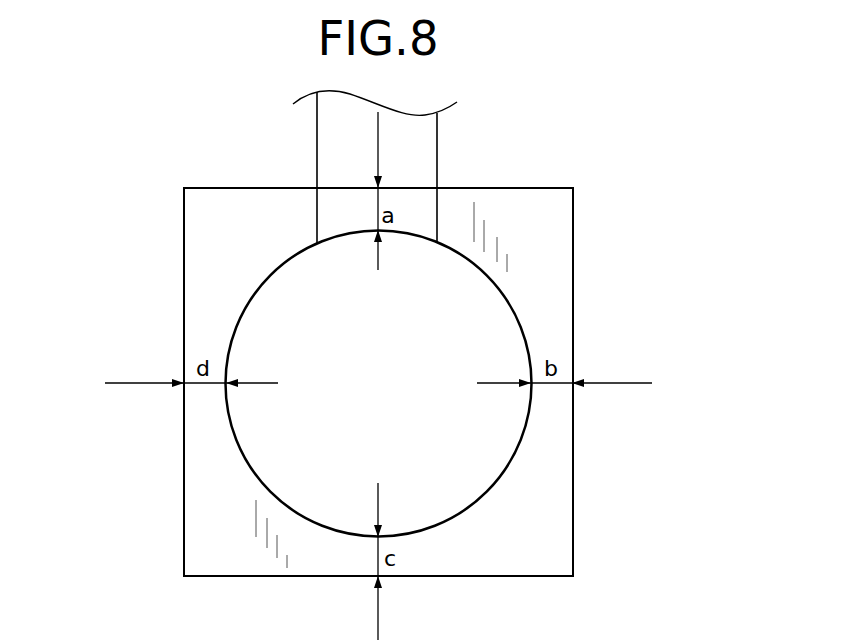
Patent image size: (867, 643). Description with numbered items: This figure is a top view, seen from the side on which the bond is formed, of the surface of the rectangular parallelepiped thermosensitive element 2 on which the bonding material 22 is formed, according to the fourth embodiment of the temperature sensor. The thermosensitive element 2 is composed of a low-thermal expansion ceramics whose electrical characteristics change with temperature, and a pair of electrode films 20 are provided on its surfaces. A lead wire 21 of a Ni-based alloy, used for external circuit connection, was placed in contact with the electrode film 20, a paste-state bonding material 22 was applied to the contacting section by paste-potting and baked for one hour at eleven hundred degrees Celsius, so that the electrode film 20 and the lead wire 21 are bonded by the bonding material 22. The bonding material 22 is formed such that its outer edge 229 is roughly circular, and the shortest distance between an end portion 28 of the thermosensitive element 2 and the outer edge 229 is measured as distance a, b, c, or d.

The thermosensitive element 2 is at (367, 333).
The electrode film 20 is at (530, 257).
The lead wire 21 is at (333, 145).
The bonding material 22 is at (305, 453).
The end portion 28 is at (184, 445).
The outer edge 229 is at (302, 402).